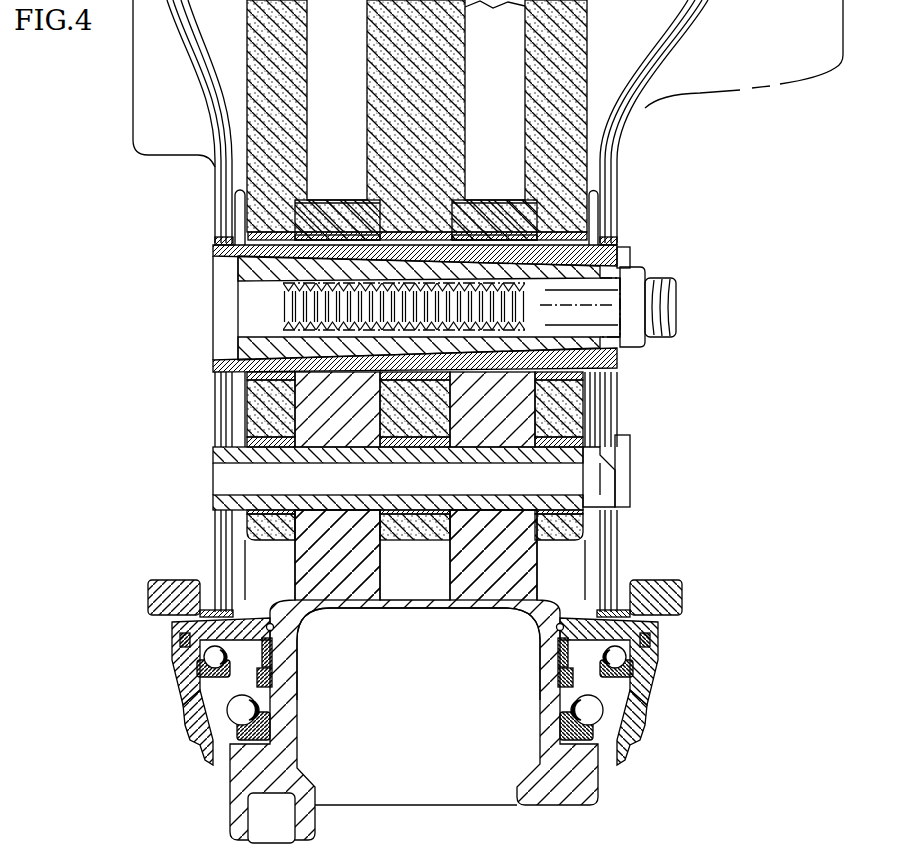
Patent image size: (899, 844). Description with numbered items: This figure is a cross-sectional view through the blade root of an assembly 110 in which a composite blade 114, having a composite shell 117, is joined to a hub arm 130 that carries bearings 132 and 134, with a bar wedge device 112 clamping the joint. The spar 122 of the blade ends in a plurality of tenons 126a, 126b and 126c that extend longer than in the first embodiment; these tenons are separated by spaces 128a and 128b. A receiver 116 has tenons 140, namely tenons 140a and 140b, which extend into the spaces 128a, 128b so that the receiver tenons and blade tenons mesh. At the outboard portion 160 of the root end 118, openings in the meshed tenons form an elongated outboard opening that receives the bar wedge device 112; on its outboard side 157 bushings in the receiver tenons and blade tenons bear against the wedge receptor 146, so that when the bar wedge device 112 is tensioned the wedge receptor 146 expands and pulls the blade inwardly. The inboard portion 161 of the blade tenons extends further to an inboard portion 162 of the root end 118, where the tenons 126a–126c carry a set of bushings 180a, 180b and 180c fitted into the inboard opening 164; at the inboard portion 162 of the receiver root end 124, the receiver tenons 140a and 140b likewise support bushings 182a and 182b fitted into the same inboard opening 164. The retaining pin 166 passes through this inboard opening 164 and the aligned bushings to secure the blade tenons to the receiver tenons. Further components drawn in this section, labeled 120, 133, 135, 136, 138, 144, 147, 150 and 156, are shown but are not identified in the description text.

The assembly 110 is at (108, 138).
The bar wedge device 112 is at (648, 249).
The composite blade 114 is at (208, 122).
The receiver 116 is at (414, 677).
The composite shell 117 is at (670, 70).
The root end 118 is at (210, 572).
The bearing housing 120 is at (190, 622).
The spar 122 is at (587, 55).
The root end 124 is at (247, 385).
The tenon 126a is at (288, 542).
The tenon 126b is at (420, 549).
The tenon 126c is at (545, 542).
The space 128a is at (337, 208).
The space 128b is at (487, 208).
The hub arm 130 is at (633, 721).
The bearing 132 is at (203, 657).
The seals 133 is at (190, 700).
The bearing 134 is at (272, 700).
The outer race 135 is at (200, 700).
The hub bottom face 136 is at (517, 806).
The housing 138 is at (637, 198).
The tenons 140 is at (448, 662).
The tenon 140a is at (328, 585).
The tenon 140b is at (480, 585).
The clamp block 144 is at (238, 262).
The wedge receptor 146 is at (617, 250).
The bolt head 147 is at (648, 345).
The threaded bolt 150 is at (250, 290).
The lower clamp block 156 is at (240, 345).
The outboard side 157 is at (326, 818).
The outboard portion 160 is at (407, 290).
The inboard portion 161 is at (160, 604).
The inboard portion 162 is at (180, 544).
The inboard opening 164 is at (215, 440).
The retaining pin 166 is at (603, 478).
The bushing 180a is at (277, 463).
The bushing 180b is at (435, 463).
The bushing 180c is at (580, 463).
The bushing 182a is at (298, 494).
The bushing 182b is at (460, 494).